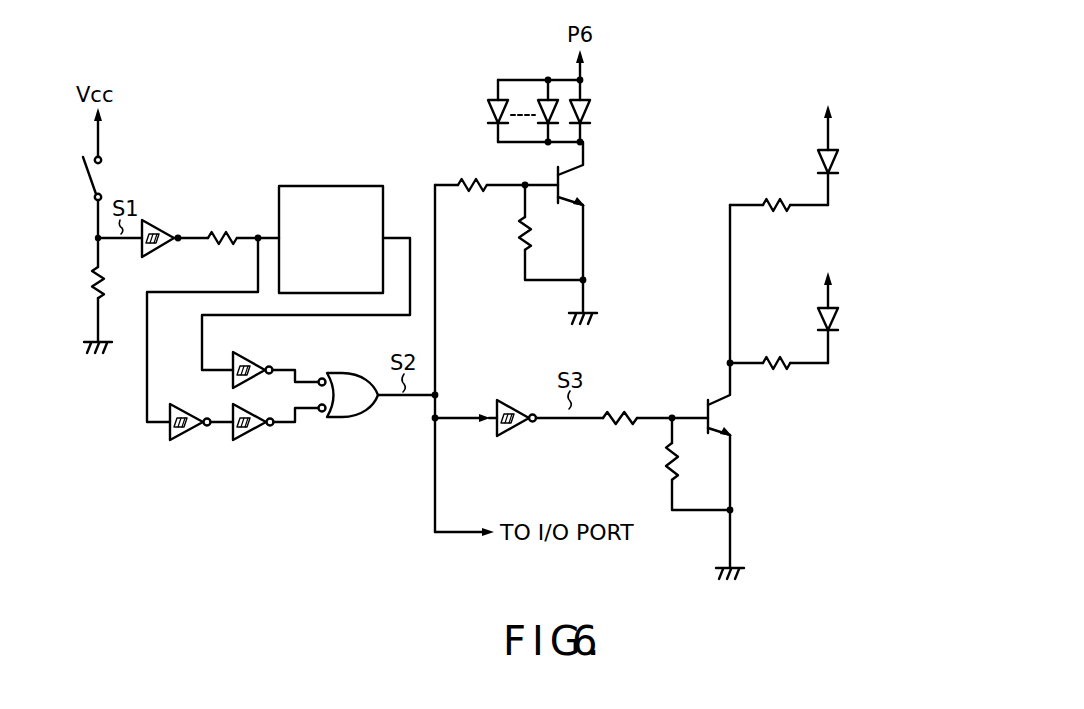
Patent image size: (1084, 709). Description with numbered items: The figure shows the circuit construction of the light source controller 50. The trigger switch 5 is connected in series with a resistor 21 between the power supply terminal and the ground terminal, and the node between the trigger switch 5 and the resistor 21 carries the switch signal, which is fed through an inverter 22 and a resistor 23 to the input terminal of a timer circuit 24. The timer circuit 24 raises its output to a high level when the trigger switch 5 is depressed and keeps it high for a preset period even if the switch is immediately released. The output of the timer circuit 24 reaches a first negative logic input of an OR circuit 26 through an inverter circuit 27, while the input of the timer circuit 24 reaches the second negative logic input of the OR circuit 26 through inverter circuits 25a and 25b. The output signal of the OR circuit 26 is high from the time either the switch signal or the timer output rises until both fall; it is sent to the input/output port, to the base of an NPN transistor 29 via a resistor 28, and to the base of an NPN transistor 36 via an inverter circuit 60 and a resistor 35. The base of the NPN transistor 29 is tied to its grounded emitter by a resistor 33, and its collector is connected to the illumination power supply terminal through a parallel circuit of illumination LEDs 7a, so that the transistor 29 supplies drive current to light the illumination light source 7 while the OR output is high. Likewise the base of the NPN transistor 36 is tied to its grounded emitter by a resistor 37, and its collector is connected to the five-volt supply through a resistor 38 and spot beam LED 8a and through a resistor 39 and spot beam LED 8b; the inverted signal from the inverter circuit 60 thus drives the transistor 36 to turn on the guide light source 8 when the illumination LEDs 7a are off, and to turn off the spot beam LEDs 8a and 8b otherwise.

The trigger switch 5 is at (107, 183).
The illumination light source 7 is at (567, 82).
The illumination LEDs 7a is at (589, 118).
The guide light source 8 is at (867, 220).
The spot beam LED 8a is at (840, 165).
The spot beam LED 8b is at (850, 303).
The resistor 21 is at (90, 269).
The inverter 22 is at (162, 223).
The resistor 23 is at (219, 225).
The timer circuit 24 is at (330, 186).
The inverter circuit 25a is at (186, 442).
The inverter circuit 25b is at (252, 442).
The OR circuit 26 is at (356, 419).
The inverter circuit 27 is at (253, 363).
The resistor 28 is at (469, 178).
The NPN transistor 29 is at (586, 186).
The resistor 33 is at (515, 243).
The resistor 35 is at (621, 408).
The NPN transistor 36 is at (738, 415).
The resistor 37 is at (663, 470).
The resistor 38 is at (767, 199).
The resistor 39 is at (767, 359).
The light source controller 50 is at (699, 76).
The inverter circuit 60 is at (515, 403).